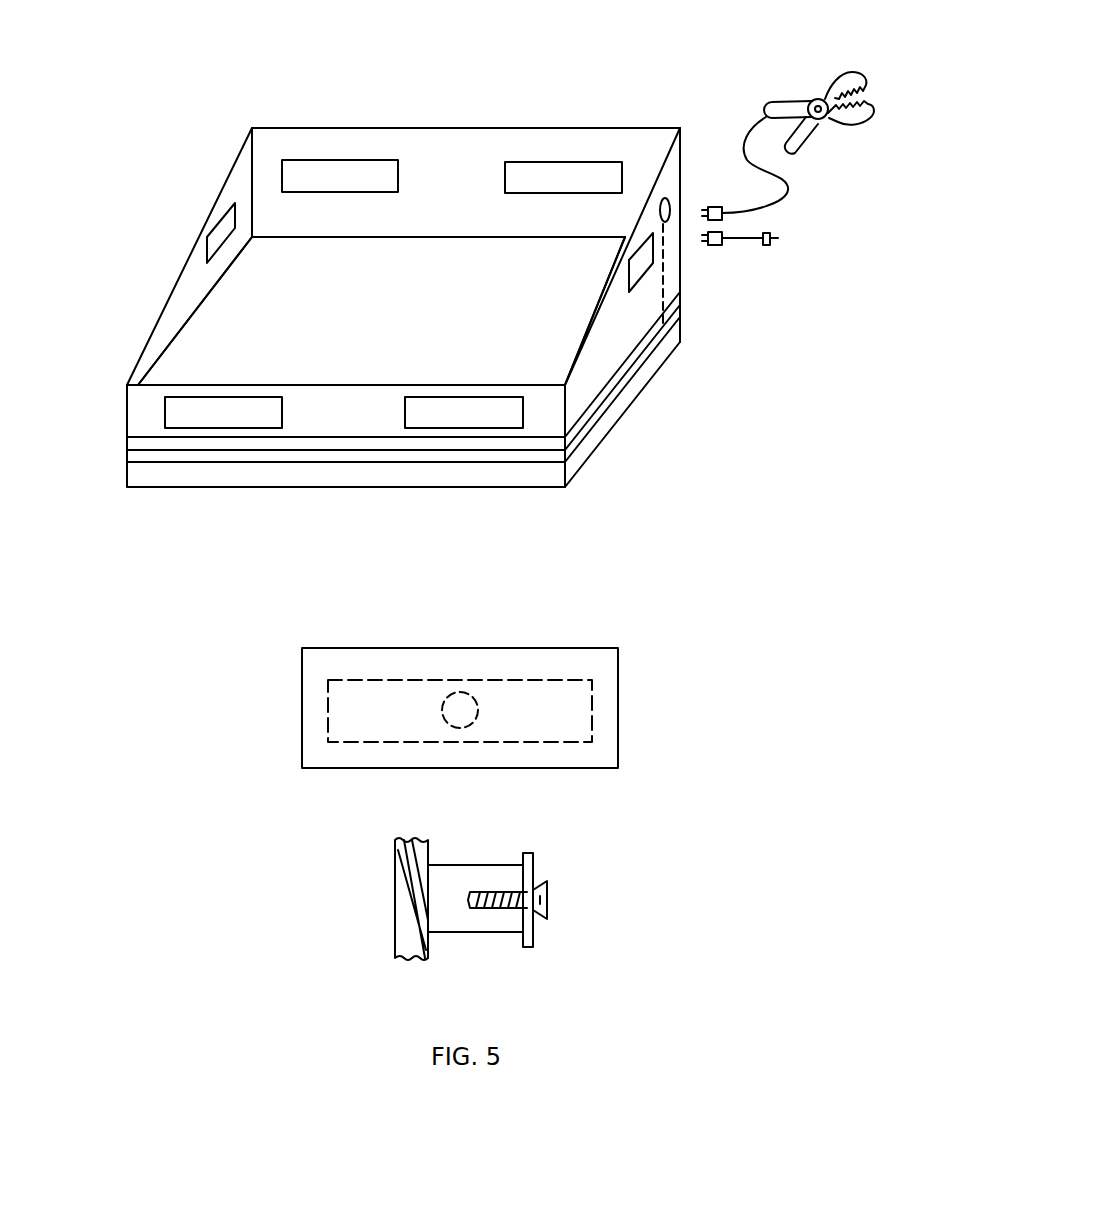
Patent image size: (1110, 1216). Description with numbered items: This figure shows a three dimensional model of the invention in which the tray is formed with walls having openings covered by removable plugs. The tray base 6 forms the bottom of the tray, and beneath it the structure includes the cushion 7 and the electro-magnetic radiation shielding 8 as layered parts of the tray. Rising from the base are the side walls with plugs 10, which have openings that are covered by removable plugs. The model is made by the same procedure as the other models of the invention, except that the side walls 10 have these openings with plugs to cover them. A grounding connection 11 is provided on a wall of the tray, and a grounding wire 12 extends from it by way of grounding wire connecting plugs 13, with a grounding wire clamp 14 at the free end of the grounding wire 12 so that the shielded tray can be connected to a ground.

The tray base 6 is at (381, 311).
The cushion 7 is at (583, 467).
The electro-magnetic radiation shielding 8 is at (127, 450).
The side walls with plugs 10 is at (466, 182).
The grounding connection 11 is at (670, 198).
The grounding wire 12 is at (743, 238).
The grounding wire connecting plugs 13 is at (763, 245).
The grounding wire clamps 14 is at (852, 70).